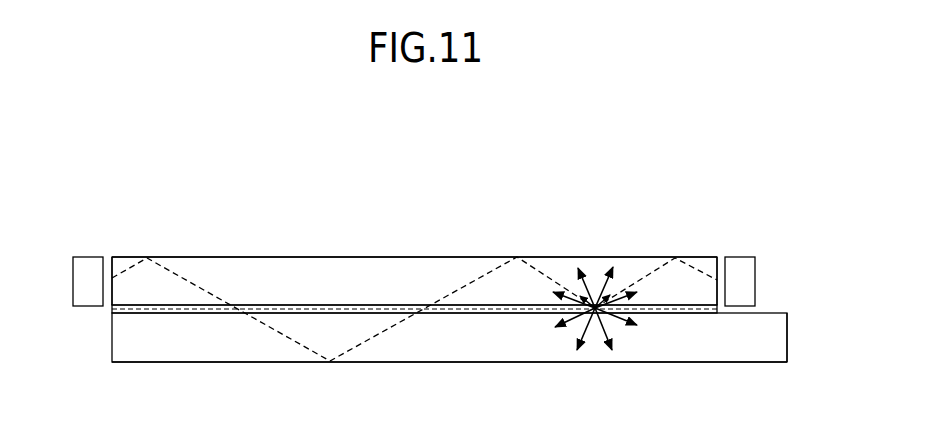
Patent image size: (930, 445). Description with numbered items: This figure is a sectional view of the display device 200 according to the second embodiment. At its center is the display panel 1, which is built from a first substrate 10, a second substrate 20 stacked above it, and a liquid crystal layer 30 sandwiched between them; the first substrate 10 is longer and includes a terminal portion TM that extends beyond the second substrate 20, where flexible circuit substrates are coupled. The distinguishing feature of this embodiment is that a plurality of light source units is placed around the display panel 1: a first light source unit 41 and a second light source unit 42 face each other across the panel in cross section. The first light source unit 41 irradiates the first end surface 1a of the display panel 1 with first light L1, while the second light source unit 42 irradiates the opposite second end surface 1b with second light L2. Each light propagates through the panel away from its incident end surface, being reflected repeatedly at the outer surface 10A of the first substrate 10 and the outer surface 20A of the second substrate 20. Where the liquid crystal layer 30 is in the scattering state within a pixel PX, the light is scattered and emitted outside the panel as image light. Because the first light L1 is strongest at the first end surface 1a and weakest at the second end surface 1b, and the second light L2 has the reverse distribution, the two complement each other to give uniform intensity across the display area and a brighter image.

The display panel 1 is at (203, 368).
The first end surface 1a is at (106, 257).
The second end surface 1b is at (721, 257).
The first substrate 10 is at (440, 352).
The outer surface of the first substrate 10A is at (315, 362).
The second substrate 20 is at (440, 270).
The outer surface of the second substrate 20A is at (315, 257).
The liquid crystal layer 30 is at (112, 312).
The first light source unit 41 is at (88, 263).
The second light source unit 42 is at (737, 265).
The display device 200 is at (613, 182).
The first light L1 is at (200, 287).
The second light L2 is at (637, 282).
The pixel PX is at (613, 325).
The terminal portion TM is at (770, 327).